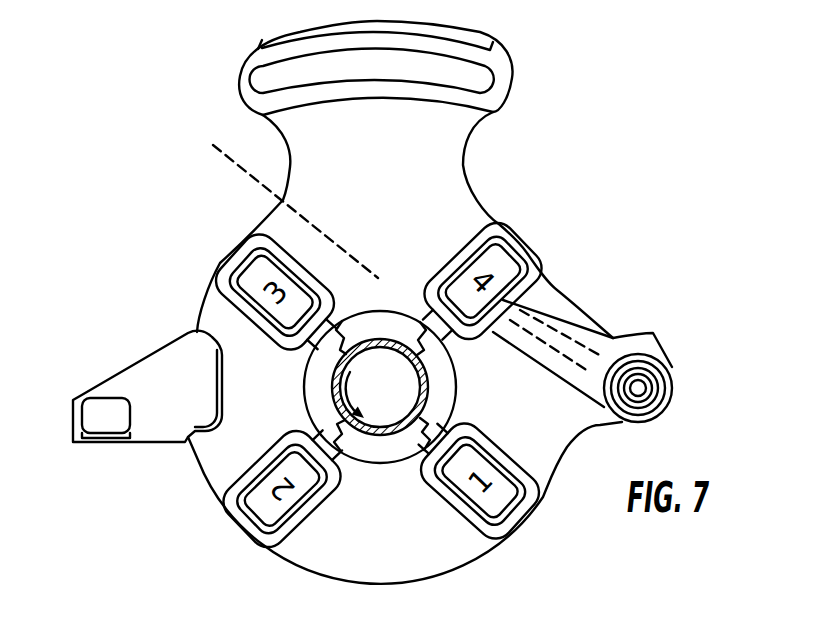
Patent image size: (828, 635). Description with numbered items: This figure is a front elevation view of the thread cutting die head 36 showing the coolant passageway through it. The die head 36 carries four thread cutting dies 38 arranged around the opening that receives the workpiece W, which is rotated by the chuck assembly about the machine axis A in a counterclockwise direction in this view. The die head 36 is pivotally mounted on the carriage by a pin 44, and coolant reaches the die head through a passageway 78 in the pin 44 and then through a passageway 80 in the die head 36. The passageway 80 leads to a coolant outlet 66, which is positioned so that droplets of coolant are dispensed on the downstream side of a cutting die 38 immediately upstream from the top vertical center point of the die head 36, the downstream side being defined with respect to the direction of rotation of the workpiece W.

The thread cutting die head 36 is at (203, 226).
The thread cutting dies 38 is at (306, 416).
The coolant outlet 66 is at (278, 192).
The passageway in die head 80 is at (583, 314).
The passageway in pin 78 is at (640, 385).
The pin 44 is at (658, 392).
The machine axis A is at (377, 384).
The workpiece W is at (380, 437).